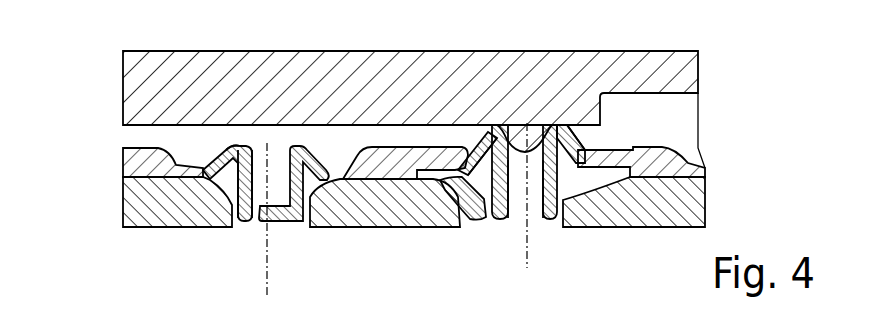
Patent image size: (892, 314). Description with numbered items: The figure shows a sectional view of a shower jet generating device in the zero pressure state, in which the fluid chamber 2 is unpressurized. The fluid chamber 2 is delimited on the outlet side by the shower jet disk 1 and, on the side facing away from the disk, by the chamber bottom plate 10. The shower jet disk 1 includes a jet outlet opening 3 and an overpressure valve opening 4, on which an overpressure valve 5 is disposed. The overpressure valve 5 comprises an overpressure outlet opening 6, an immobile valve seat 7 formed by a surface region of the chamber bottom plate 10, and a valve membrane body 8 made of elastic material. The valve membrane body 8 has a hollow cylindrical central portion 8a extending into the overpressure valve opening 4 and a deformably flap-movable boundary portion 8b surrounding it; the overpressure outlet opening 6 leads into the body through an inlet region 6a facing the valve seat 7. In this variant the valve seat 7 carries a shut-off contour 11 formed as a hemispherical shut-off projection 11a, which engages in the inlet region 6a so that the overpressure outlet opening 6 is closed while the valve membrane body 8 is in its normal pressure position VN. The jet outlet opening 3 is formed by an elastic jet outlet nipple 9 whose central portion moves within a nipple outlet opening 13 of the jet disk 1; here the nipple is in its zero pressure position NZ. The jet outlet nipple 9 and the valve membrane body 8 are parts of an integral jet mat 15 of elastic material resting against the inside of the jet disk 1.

The chamber bottom plate 10 is at (138, 92).
The fluid chamber 2 is at (136, 135).
The jet mat 15 is at (128, 163).
The shower jet disk 1 is at (378, 226).
The nipple outlet opening 13 is at (237, 229).
The jet outlet opening 3 is at (257, 218).
The jet outlet nipple 9 is at (284, 220).
The overpressure valve opening 4 is at (488, 220).
The valve seat 7 is at (499, 135).
The inlet region 6a is at (520, 153).
The overpressure valve 5 is at (547, 123).
The boundary portion 8b is at (554, 130).
The valve membrane body 8 is at (496, 220).
The overpressure outlet opening 6 is at (532, 203).
The central portion 8a is at (551, 218).
The shut-off contour 11 is at (634, 226).
The hemispherical shut-off projection 11a is at (567, 198).
The zero pressure position NZ is at (222, 148).
The normal pressure position VN is at (496, 173).